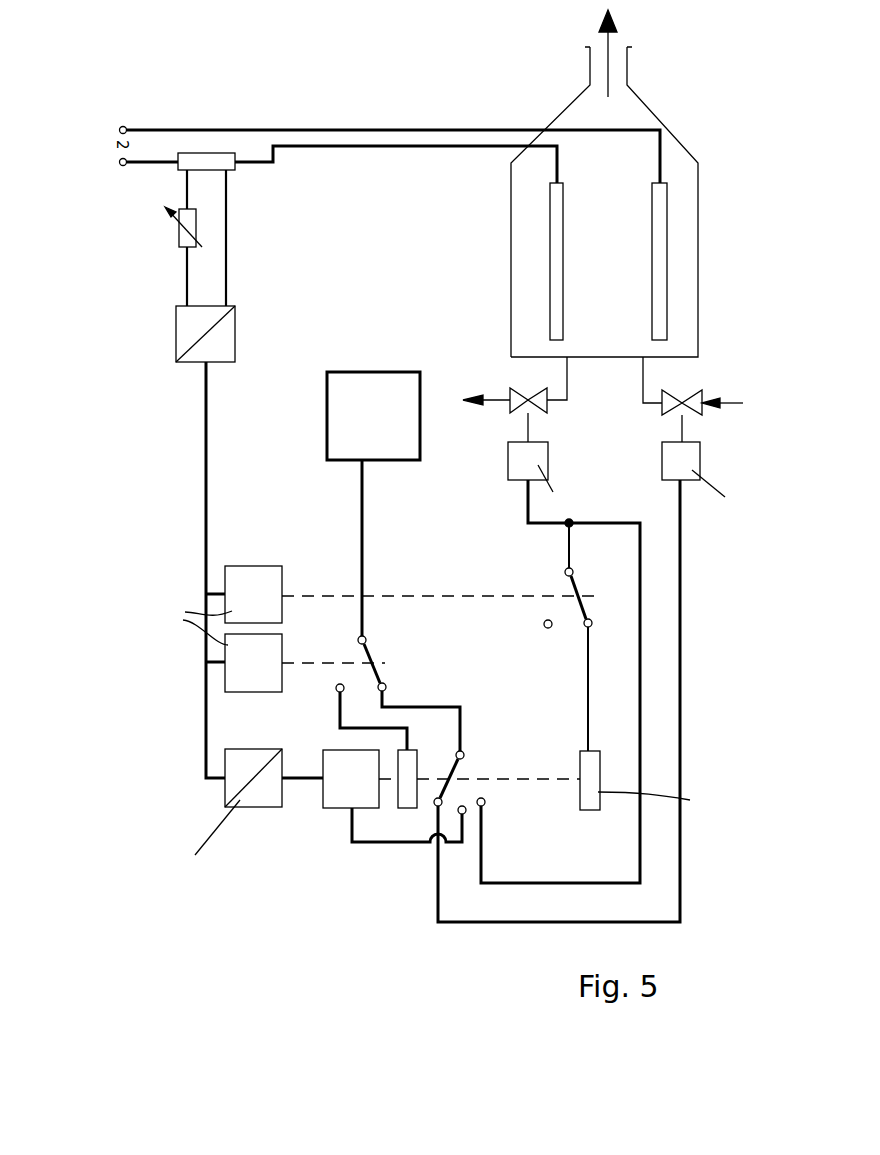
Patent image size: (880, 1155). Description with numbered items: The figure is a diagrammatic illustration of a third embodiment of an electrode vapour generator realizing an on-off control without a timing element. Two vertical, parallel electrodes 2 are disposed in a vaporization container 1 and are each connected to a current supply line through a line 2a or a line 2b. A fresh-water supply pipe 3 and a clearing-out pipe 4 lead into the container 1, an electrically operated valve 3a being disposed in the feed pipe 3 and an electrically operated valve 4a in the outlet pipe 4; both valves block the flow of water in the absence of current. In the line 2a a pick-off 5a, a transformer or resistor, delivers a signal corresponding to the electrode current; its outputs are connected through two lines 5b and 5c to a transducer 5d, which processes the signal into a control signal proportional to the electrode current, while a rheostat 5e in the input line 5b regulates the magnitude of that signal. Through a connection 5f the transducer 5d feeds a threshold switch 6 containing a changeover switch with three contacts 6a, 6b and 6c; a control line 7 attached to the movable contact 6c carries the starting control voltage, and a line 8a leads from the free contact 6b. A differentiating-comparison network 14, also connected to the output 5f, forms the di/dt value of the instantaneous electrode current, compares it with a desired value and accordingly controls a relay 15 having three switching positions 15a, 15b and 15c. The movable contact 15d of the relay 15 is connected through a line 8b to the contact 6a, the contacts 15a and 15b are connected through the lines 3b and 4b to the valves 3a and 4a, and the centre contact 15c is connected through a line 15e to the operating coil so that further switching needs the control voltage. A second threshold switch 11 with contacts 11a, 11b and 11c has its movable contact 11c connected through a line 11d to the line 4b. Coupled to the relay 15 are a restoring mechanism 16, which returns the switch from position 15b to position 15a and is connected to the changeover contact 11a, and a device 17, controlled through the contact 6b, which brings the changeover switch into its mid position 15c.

The vaporization container 1 is at (692, 205).
The electrodes 2 is at (553, 288).
The line 2a is at (425, 148).
The line 2b is at (440, 132).
The fresh-water supply pipe 3 is at (643, 380).
The electrically operated valve 3a is at (682, 428).
The line 3b is at (460, 923).
The clearing-out pipe 4 is at (567, 380).
The electrically operated valve 4a is at (528, 428).
The line 4b is at (488, 885).
The pick-off 5a is at (218, 158).
The line 5b is at (187, 280).
The line 5c is at (226, 280).
The transducer 5d is at (225, 343).
The rheostat 5e is at (190, 220).
The connection 5f is at (206, 437).
The threshold switch 6 is at (233, 677).
The contact 6a is at (387, 687).
The free contact 6b is at (335, 688).
The movable contact 6c is at (367, 640).
The control line 7 is at (362, 540).
The line 8a is at (340, 728).
The line 8b is at (460, 707).
The second threshold switch 11 is at (245, 560).
The changeover contact 11a is at (592, 627).
The fixed contact 11b is at (544, 626).
The movable contact 11c is at (574, 570).
The line 11d is at (569, 540).
The differentiating-comparison network 14 is at (255, 800).
The relay 15 is at (333, 800).
The switching position 15a is at (434, 806).
The switching position 15b is at (484, 806).
The contact 15c is at (452, 840).
The movable contact 15d is at (465, 755).
The line 15e is at (352, 850).
The restoring mechanism 16 is at (588, 812).
The device 17 is at (410, 762).